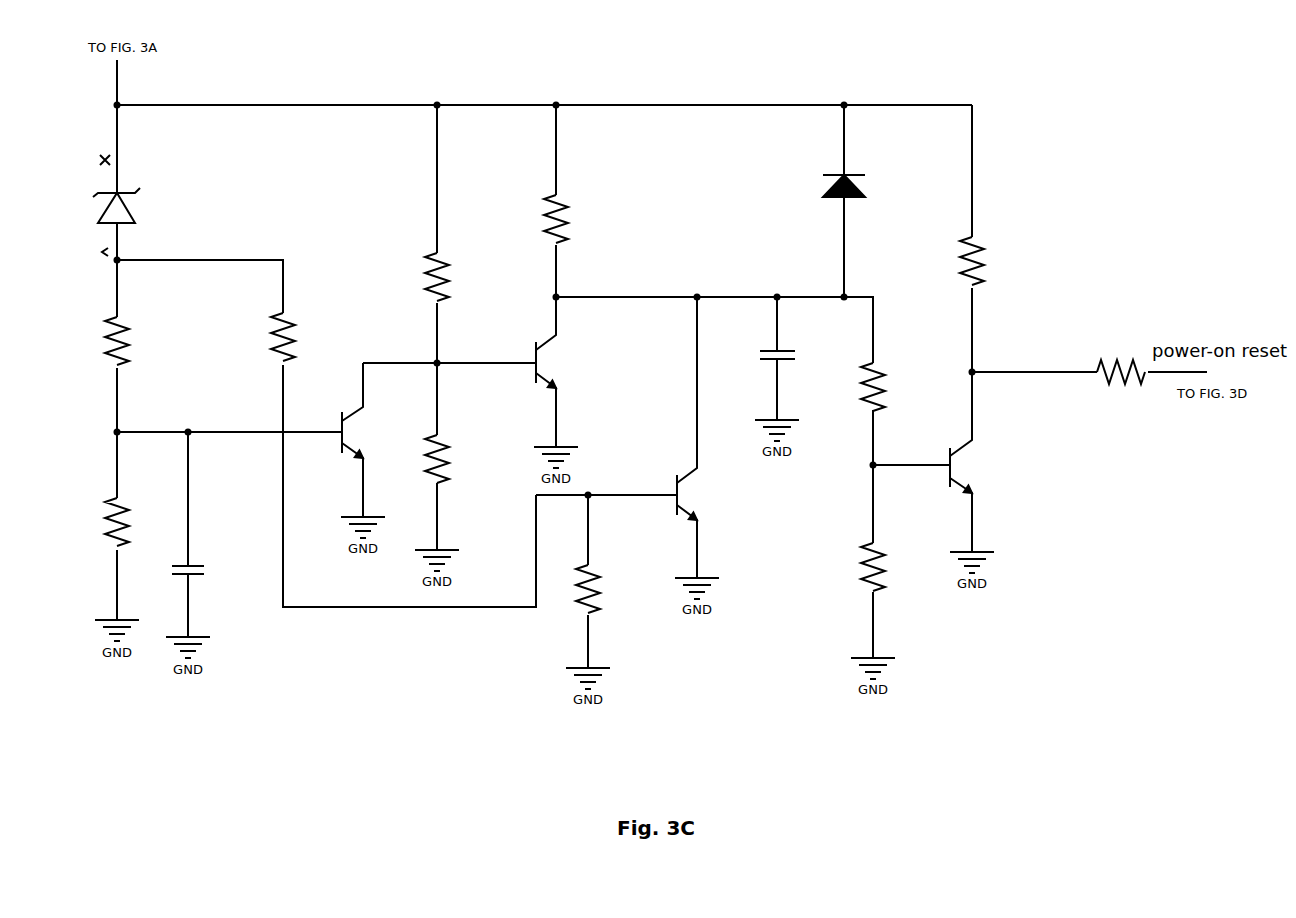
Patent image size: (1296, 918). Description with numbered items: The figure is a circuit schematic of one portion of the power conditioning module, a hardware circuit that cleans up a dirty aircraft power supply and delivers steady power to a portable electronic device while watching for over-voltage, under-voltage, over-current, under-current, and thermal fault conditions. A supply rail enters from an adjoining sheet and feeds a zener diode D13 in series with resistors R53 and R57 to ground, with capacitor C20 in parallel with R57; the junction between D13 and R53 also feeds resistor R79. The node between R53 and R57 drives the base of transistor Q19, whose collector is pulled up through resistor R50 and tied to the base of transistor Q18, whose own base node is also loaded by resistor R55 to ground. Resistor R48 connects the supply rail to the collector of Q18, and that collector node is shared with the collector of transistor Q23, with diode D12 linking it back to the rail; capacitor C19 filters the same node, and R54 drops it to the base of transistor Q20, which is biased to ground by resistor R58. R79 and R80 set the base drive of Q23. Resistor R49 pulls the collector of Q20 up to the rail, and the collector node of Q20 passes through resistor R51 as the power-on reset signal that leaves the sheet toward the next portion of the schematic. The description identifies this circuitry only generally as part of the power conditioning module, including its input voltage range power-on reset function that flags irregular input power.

The zener diode D13 24V MM3Z24VB_SOD-323 D13 is at (160, 205).
The diode D12 BAS116 D12 is at (882, 191).
The resistor R53 27K R53 is at (141, 342).
The resistor R57 27K R57 is at (141, 523).
The resistor R79 300K R79 is at (310, 338).
The resistor R50 100K R50 is at (464, 279).
The resistor R48 100K R48 is at (582, 221).
The resistor R55 27K R55 is at (460, 460).
The resistor R80 27K R80 is at (611, 591).
The resistor R54 100K R54 is at (900, 388).
The resistor R58 100K R58 is at (900, 569).
The resistor R49 47K R49 is at (995, 263).
The resistor R51 22K power-on reset output R51 is at (1121, 379).
The capacitor C20 0.01uF C20 is at (219, 591).
The capacitor C19 1.0uF C19 is at (805, 368).
The transistor Q19 BC846 Q19 is at (374, 440).
The transistor Q18 BC846 Q18 is at (567, 372).
The transistor Q23 BC846 Q23 is at (709, 437).
The transistor Q20 BC846 Q20 is at (982, 462).